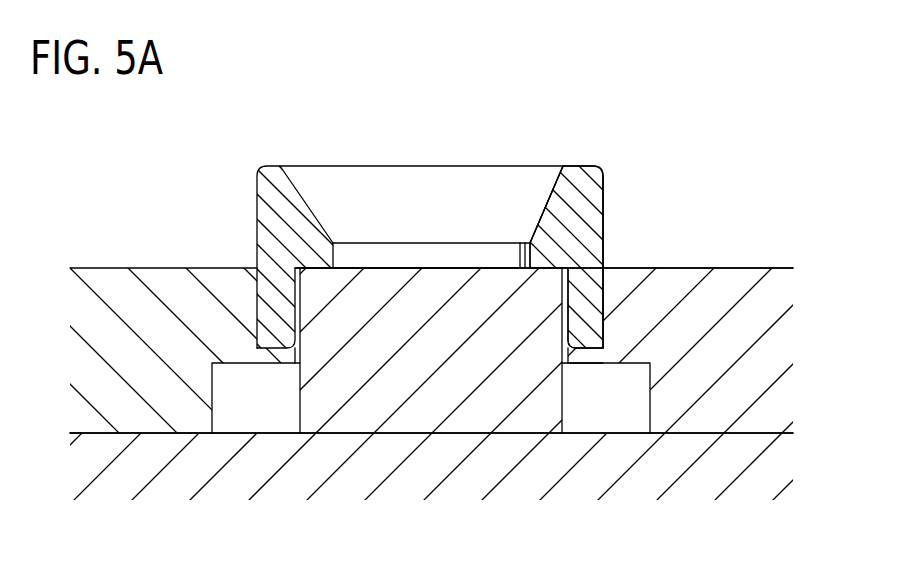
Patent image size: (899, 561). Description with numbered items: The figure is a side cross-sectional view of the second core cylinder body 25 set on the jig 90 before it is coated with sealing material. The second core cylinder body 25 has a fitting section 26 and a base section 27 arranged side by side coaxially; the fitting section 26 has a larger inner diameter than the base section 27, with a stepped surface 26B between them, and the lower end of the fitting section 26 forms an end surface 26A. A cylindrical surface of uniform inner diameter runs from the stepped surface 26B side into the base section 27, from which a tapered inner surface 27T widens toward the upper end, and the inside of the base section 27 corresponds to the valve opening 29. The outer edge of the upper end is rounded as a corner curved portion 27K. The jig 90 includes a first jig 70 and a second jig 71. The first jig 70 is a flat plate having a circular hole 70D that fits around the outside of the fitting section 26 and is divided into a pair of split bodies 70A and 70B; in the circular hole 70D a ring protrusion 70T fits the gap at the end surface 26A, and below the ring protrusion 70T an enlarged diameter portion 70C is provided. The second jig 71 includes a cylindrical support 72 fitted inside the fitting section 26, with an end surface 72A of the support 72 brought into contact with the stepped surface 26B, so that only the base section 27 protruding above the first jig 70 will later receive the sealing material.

The second core cylinder body 25 is at (619, 157).
The fitting section 26 is at (583, 303).
The end surface 26A is at (604, 327).
The stepped surface 26B is at (540, 262).
The base section 27 is at (568, 195).
The corner curved portion 27K is at (605, 182).
The tapered inner surface 27T is at (522, 243).
The valve opening 29 is at (422, 200).
The first jig 70 is at (785, 297).
The split body 70A is at (757, 383).
The split body 70B is at (110, 378).
The enlarged diameter portion 70C is at (640, 403).
The circular hole 70D is at (604, 247).
The ring protrusion 70T is at (593, 355).
The second jig 71 is at (775, 471).
The support 72 is at (495, 372).
The end surface 72A is at (467, 266).
The jig 90 is at (805, 258).